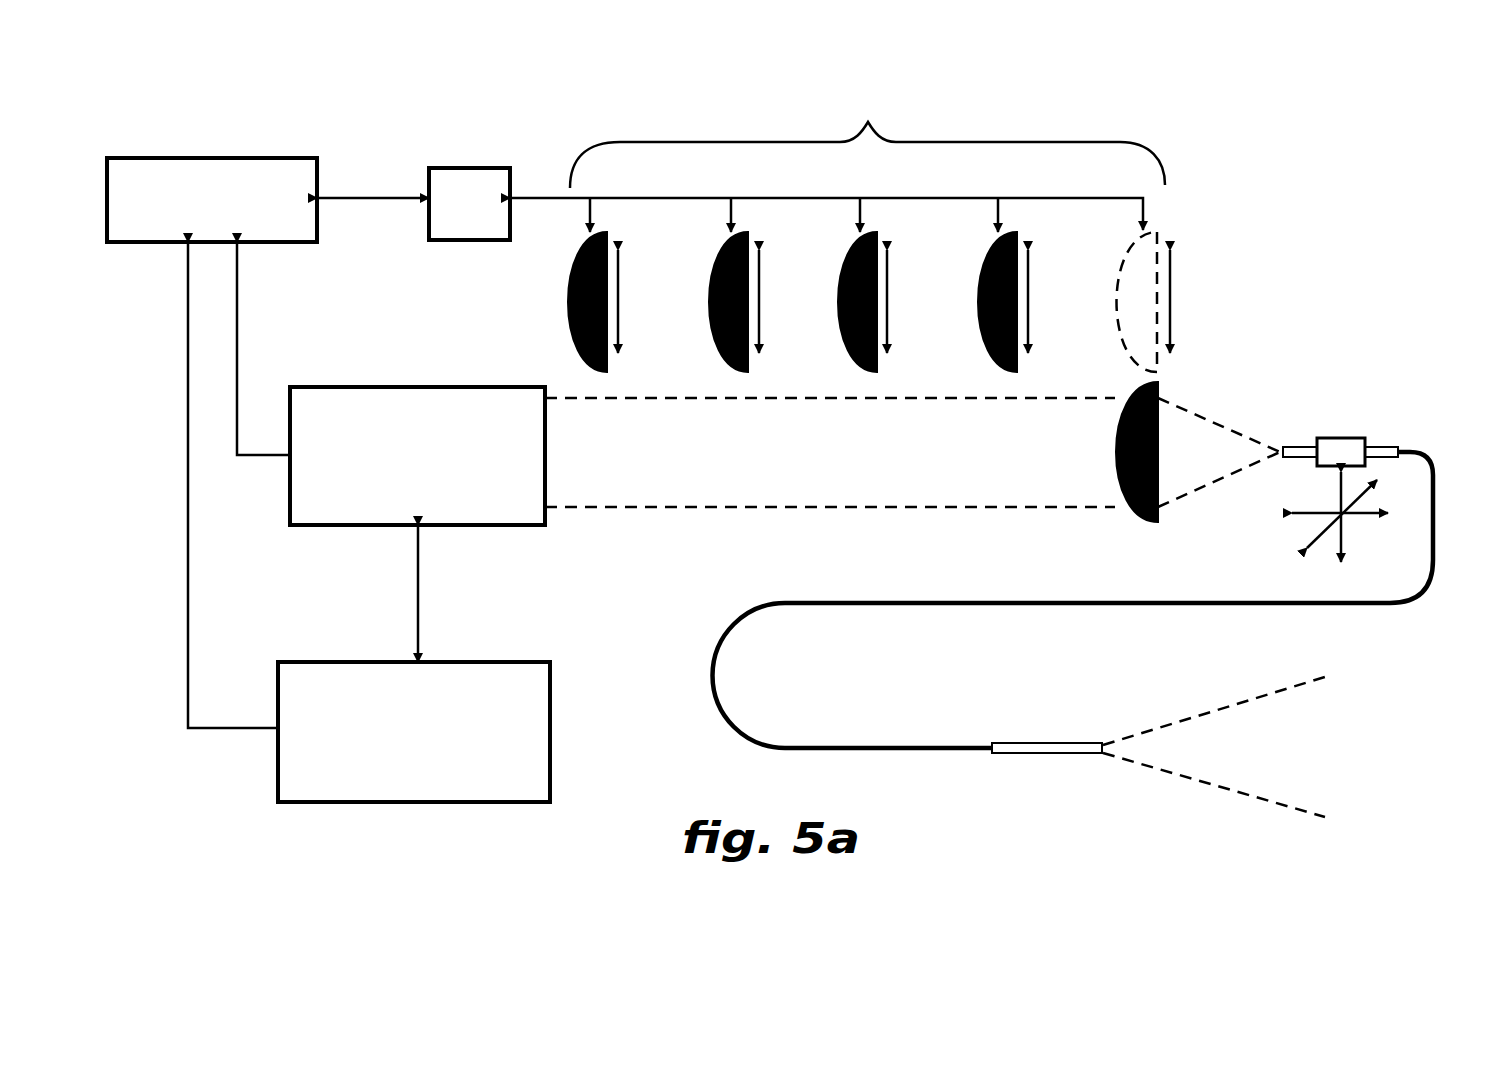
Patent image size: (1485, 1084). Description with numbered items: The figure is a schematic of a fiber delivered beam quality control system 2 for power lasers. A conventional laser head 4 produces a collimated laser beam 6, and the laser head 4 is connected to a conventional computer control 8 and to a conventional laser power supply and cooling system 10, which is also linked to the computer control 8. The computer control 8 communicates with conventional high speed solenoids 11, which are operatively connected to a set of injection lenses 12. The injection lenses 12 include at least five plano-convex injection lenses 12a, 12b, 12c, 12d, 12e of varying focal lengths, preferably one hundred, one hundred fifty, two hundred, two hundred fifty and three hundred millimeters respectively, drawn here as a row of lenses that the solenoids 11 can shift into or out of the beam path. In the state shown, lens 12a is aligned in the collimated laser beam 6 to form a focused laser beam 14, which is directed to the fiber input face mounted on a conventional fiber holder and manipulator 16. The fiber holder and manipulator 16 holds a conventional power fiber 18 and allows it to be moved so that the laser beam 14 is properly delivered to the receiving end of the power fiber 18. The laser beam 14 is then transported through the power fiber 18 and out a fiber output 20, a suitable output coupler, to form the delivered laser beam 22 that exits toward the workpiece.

The fiber delivered beam quality control system 2 is at (1318, 190).
The laser head 4 is at (382, 518).
The collimated laser beam 6 is at (668, 478).
The computer control 8 is at (205, 158).
The laser power supply and cooling system 10 is at (550, 755).
The high speed solenoids 11 is at (487, 168).
The injection lenses 12 is at (840, 231).
The plano-convex injection lens 12a is at (1160, 390).
The plano-convex injection lens 12b is at (977, 280).
The plano-convex injection lens 12c is at (835, 280).
The plano-convex injection lens 12d is at (705, 270).
The plano-convex injection lens 12e is at (567, 310).
The laser beam 14 is at (1218, 467).
The fiber holder and manipulator 16 is at (1338, 438).
The power fiber 18 is at (1070, 603).
The fiber output 20 is at (1023, 755).
The laser beam 22 is at (1212, 780).